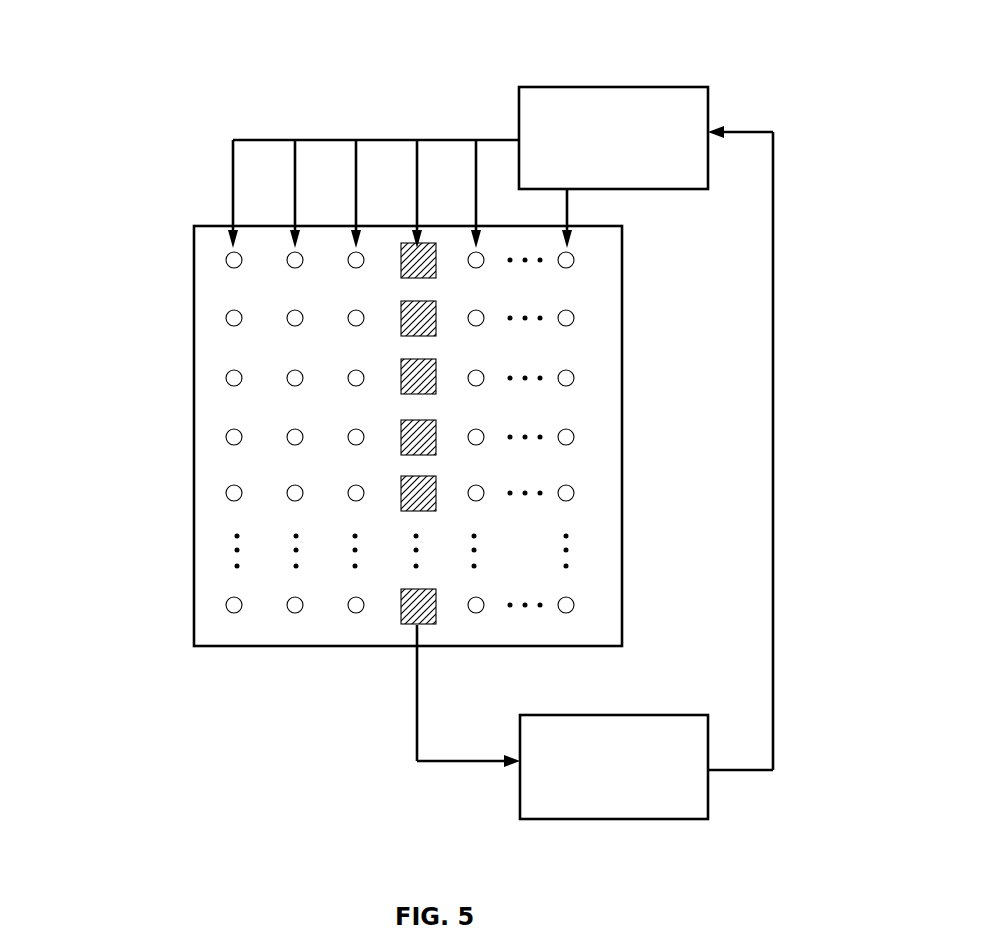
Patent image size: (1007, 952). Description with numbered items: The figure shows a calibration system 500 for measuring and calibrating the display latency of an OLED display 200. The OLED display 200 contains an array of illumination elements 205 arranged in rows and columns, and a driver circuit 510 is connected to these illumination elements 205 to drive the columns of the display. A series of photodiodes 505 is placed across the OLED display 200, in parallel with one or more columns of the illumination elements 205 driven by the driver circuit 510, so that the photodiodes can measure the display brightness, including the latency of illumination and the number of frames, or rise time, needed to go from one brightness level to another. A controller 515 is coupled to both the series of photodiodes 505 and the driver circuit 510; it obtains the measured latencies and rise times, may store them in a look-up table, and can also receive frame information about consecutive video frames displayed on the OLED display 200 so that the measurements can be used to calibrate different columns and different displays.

The calibration system 500 is at (63, 28).
The OLED display 200 is at (207, 210).
The illumination elements 205 is at (228, 602).
The series of photodiodes 505 is at (403, 640).
The driver circuit 510 is at (598, 172).
The controller 515 is at (599, 792).